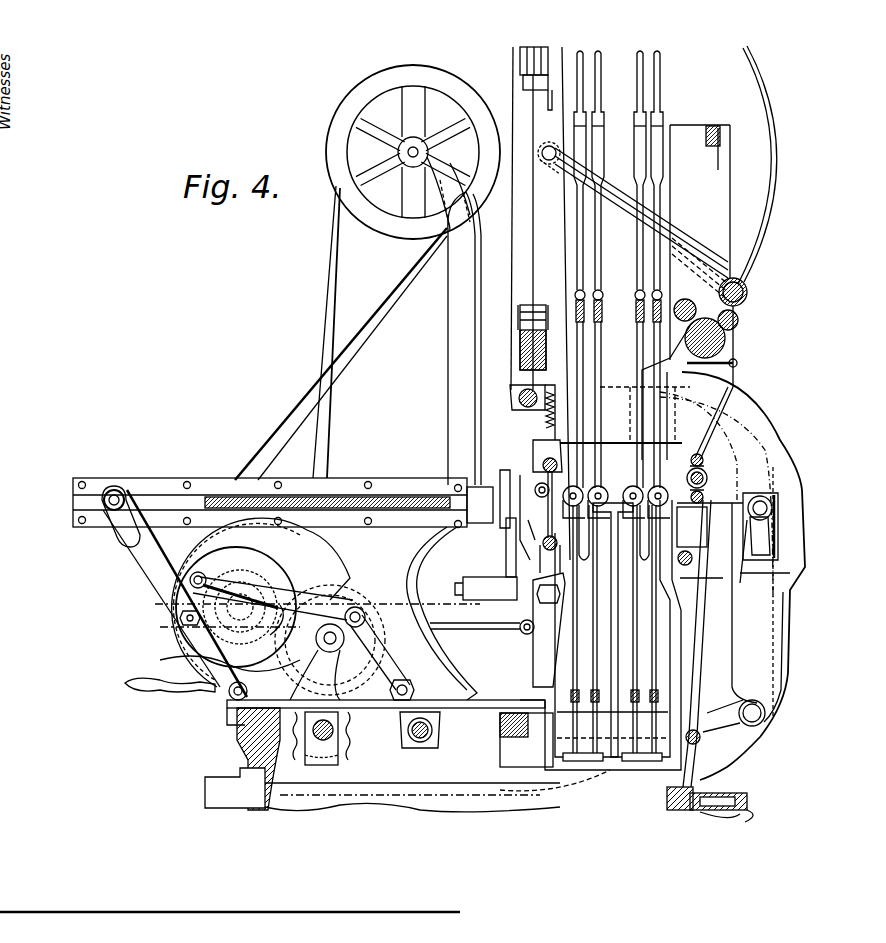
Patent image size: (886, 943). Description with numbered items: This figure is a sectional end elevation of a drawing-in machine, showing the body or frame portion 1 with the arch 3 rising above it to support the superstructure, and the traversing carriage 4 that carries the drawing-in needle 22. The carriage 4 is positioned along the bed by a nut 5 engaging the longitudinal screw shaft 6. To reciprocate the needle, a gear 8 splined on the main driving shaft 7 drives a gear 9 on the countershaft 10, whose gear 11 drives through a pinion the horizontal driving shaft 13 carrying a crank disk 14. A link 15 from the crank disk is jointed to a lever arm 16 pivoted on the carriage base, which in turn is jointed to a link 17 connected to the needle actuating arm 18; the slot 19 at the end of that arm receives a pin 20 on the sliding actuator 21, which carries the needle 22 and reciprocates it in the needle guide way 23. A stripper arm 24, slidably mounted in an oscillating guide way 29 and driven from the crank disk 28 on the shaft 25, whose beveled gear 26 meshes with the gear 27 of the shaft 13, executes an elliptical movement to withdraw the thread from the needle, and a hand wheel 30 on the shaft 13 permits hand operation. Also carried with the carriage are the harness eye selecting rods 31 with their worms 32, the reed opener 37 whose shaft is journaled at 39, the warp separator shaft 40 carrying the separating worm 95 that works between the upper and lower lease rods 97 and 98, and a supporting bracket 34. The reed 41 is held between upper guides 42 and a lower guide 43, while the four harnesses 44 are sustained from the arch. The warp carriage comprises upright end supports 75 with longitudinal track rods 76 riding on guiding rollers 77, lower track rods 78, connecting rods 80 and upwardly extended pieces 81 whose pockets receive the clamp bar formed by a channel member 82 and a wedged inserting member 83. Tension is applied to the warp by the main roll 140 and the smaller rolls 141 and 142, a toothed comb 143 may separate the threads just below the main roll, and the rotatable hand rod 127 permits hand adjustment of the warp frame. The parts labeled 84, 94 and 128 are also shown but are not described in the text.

The body or frame portion 1 is at (262, 746).
The arch 3 is at (548, 226).
The carriage 4 is at (227, 713).
The nut 5 is at (412, 742).
The longitudinal screw shaft 6 is at (432, 732).
The main driving shaft 7 is at (332, 740).
The gear 8 is at (350, 726).
The gear 9 is at (322, 572).
The countershaft 10 is at (330, 645).
The gear 11 is at (380, 632).
The horizontal driving shaft 13 is at (175, 613).
The crank disk 14 is at (172, 582).
The link 15 is at (212, 586).
The lever arm 16 is at (395, 670).
The link 17 is at (262, 635).
The needle actuating arm 18 is at (148, 567).
The slot 19 is at (130, 538).
The pin 20 is at (113, 490).
The sliding actuator 21 is at (172, 498).
The drawing-in needle 22 is at (397, 486).
The needle guide way 23 is at (228, 482).
The stripper arm 24 is at (535, 487).
The shaft 25 is at (440, 598).
The beveled gear 26 is at (280, 598).
The gear 27 is at (252, 594).
The crank disk 28 is at (507, 632).
The oscillating guide way 29 is at (470, 582).
The hand wheel 30 is at (165, 633).
The harness eye selecting rods 31 is at (570, 486).
The worm 32 is at (664, 438).
The supporting arm or bracket 34 is at (580, 770).
The reed opener 37 is at (480, 482).
The reed opener shaft journal 39 is at (440, 476).
The warp separator shaft 40 is at (704, 494).
The reed 41 is at (545, 470).
The upper guides 42 is at (568, 443).
The lower guide 43 is at (556, 606).
The harnesses 44 is at (575, 320).
The upright end supports 75 is at (803, 573).
The longitudinal track rods 76 is at (778, 508).
The guiding rollers 77 is at (770, 532).
The lower track rods 78 is at (766, 716).
The rods 80 is at (692, 562).
The upwardly extended pieces 81 is at (692, 422).
The channel member 82 is at (730, 128).
The inserting member 83 is at (712, 126).
The foot 84 is at (747, 810).
The support 94 is at (747, 793).
The separating device 95 is at (713, 468).
The upper lease rod 97 is at (704, 459).
The lower lease rod 98 is at (707, 478).
The rotatable hand rod 127 is at (748, 292).
The guide rods 128 is at (680, 240).
The main roll 140 is at (726, 340).
The roll 141 is at (740, 322).
The roll 142 is at (686, 306).
The toothed comb 143 is at (720, 388).